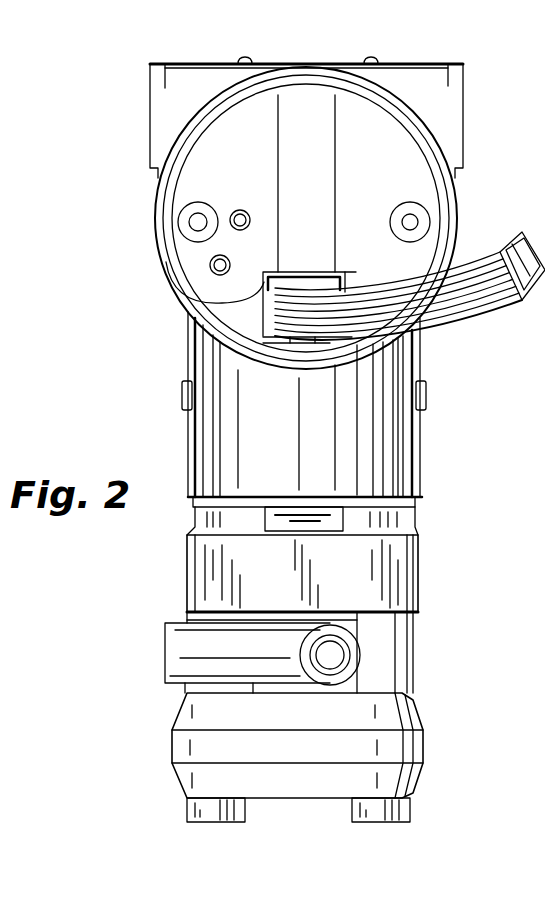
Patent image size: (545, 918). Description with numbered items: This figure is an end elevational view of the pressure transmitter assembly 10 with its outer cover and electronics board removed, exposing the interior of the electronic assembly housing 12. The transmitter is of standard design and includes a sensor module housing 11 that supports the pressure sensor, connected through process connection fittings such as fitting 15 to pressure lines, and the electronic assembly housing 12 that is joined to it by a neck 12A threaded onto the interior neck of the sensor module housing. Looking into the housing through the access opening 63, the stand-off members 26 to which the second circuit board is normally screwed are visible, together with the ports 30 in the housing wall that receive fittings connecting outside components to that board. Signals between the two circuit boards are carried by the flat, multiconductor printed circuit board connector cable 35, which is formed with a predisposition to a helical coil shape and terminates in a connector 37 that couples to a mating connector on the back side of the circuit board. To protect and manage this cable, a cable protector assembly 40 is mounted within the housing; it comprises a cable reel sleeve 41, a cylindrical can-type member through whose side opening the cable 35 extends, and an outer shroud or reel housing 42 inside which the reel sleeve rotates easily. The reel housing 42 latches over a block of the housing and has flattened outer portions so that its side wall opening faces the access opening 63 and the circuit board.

The pressure transmitter assembly 10 is at (160, 423).
The electronic assembly housing 12 is at (413, 85).
The neck 12A is at (420, 458).
The ports 30 is at (150, 103).
The access opening 63 is at (402, 168).
The stand-off members 26 is at (208, 207).
The cable reel sleeve 41 is at (224, 313).
The reel housing 42 is at (295, 272).
The cable protector assembly 40 is at (347, 264).
The multiconductor printed circuit board connector cable 35 is at (458, 320).
The connector 37 is at (517, 228).
The sensor module housing 11 is at (418, 572).
The fitting 15 is at (382, 716).